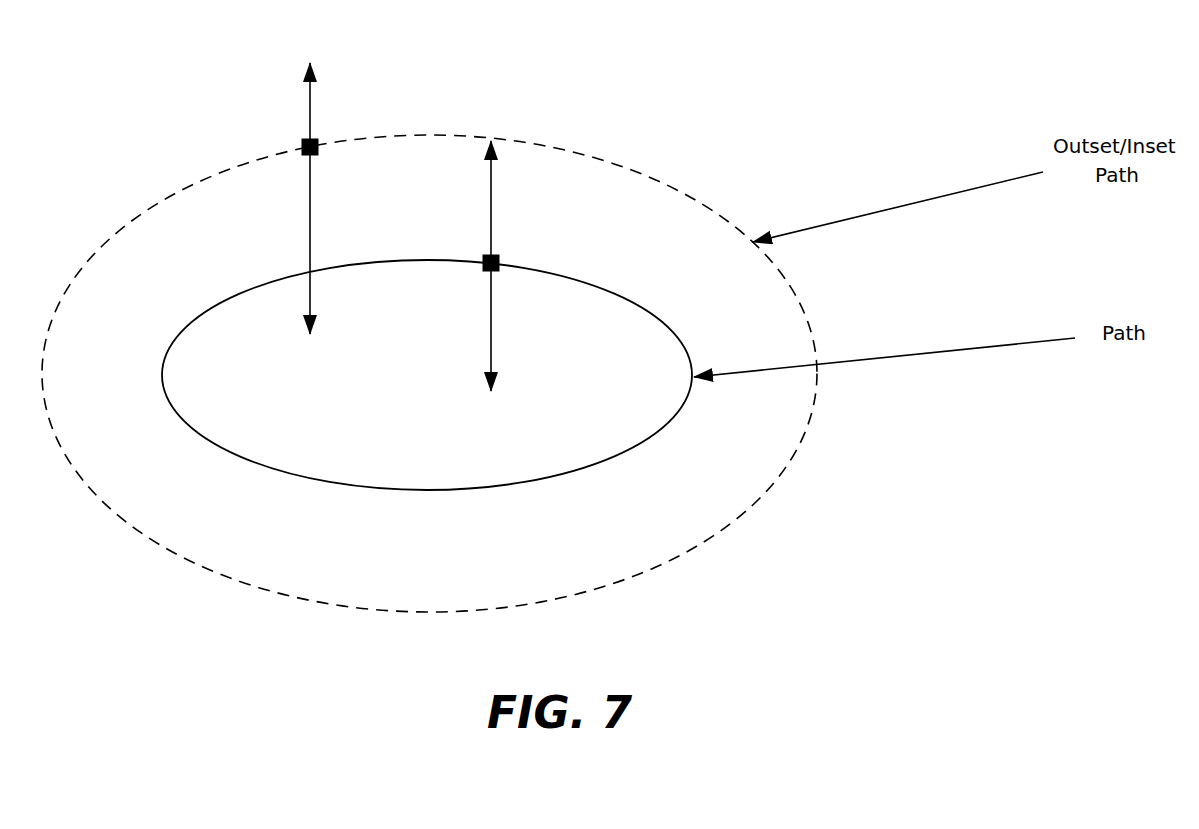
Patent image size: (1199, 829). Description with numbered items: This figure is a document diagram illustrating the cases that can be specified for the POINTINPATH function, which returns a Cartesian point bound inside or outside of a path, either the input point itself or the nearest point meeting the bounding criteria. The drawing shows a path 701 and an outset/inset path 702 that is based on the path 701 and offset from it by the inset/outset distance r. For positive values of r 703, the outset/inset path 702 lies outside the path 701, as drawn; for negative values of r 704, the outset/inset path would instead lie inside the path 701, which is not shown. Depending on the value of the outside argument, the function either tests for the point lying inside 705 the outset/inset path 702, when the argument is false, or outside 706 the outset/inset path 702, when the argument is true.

The path 701 is at (427, 385).
The outset/inset path 702 is at (429, 373).
The positive value of r 703 is at (474, 206).
The negative value of r 704 is at (472, 327).
The inside test 705 is at (280, 258).
The outside test 706 is at (334, 79).